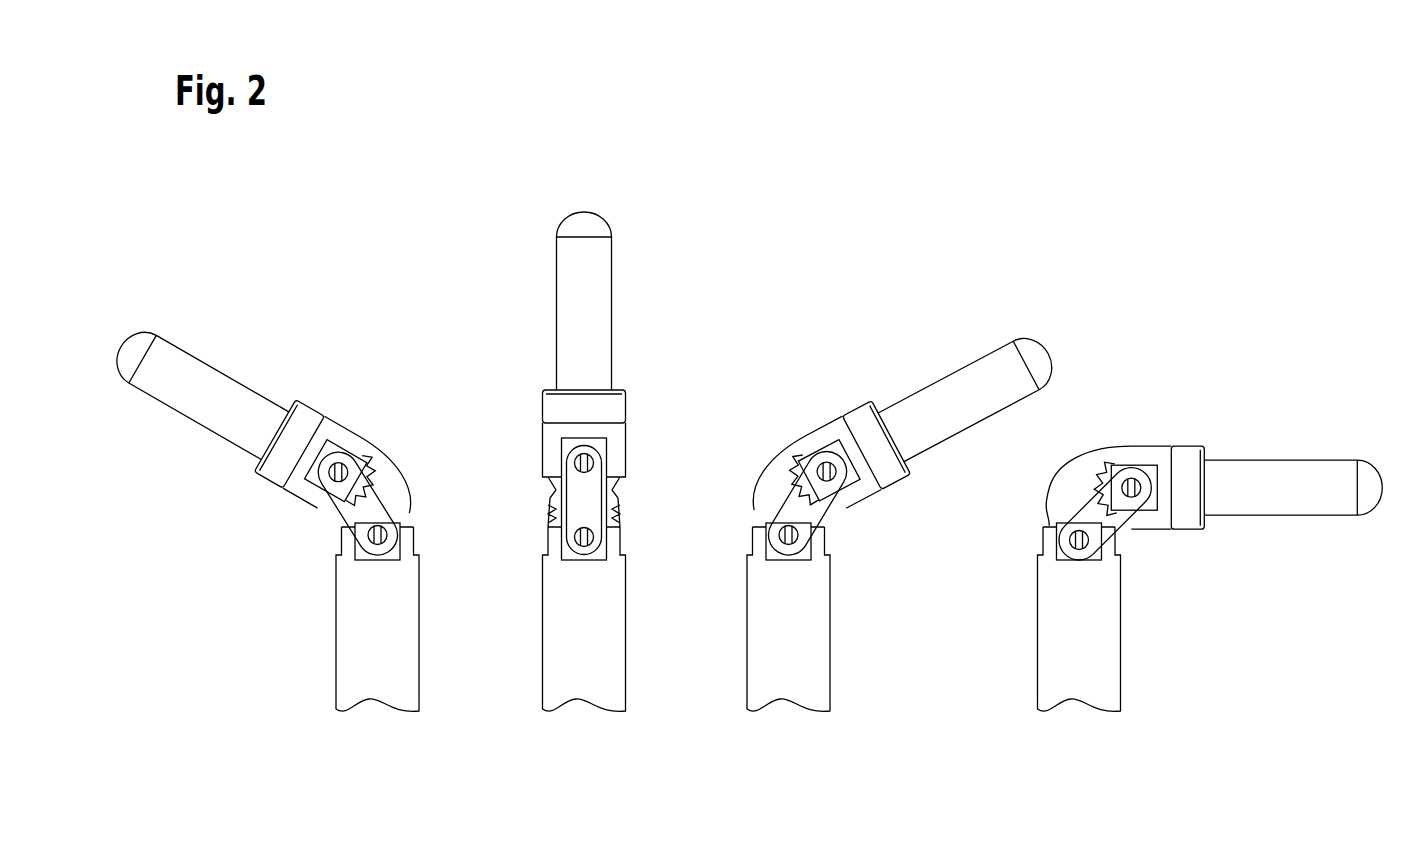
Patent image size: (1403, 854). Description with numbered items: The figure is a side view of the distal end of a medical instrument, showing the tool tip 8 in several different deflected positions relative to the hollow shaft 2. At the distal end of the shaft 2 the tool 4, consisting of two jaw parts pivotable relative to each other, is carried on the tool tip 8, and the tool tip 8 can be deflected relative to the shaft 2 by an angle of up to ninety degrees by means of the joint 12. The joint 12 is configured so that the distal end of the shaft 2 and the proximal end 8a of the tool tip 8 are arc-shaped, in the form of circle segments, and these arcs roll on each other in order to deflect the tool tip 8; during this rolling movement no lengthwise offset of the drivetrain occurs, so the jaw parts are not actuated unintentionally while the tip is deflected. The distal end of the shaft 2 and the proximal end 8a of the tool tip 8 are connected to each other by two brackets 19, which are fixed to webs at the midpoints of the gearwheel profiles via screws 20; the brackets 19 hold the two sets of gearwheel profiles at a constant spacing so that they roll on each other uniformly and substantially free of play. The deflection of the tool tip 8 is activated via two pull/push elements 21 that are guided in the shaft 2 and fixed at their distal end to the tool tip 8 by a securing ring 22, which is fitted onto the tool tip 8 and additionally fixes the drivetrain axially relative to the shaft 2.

The hollow shaft 2 is at (419, 630).
The tool 4 is at (165, 306).
The tool tip 8 is at (746, 338).
The proximal end of the tool tip 8a is at (345, 440).
The joint 12 is at (720, 490).
The brackets 19 is at (360, 500).
The screws 20 is at (338, 473).
The pull/push elements 21 is at (411, 480).
The securing ring 22 is at (311, 418).